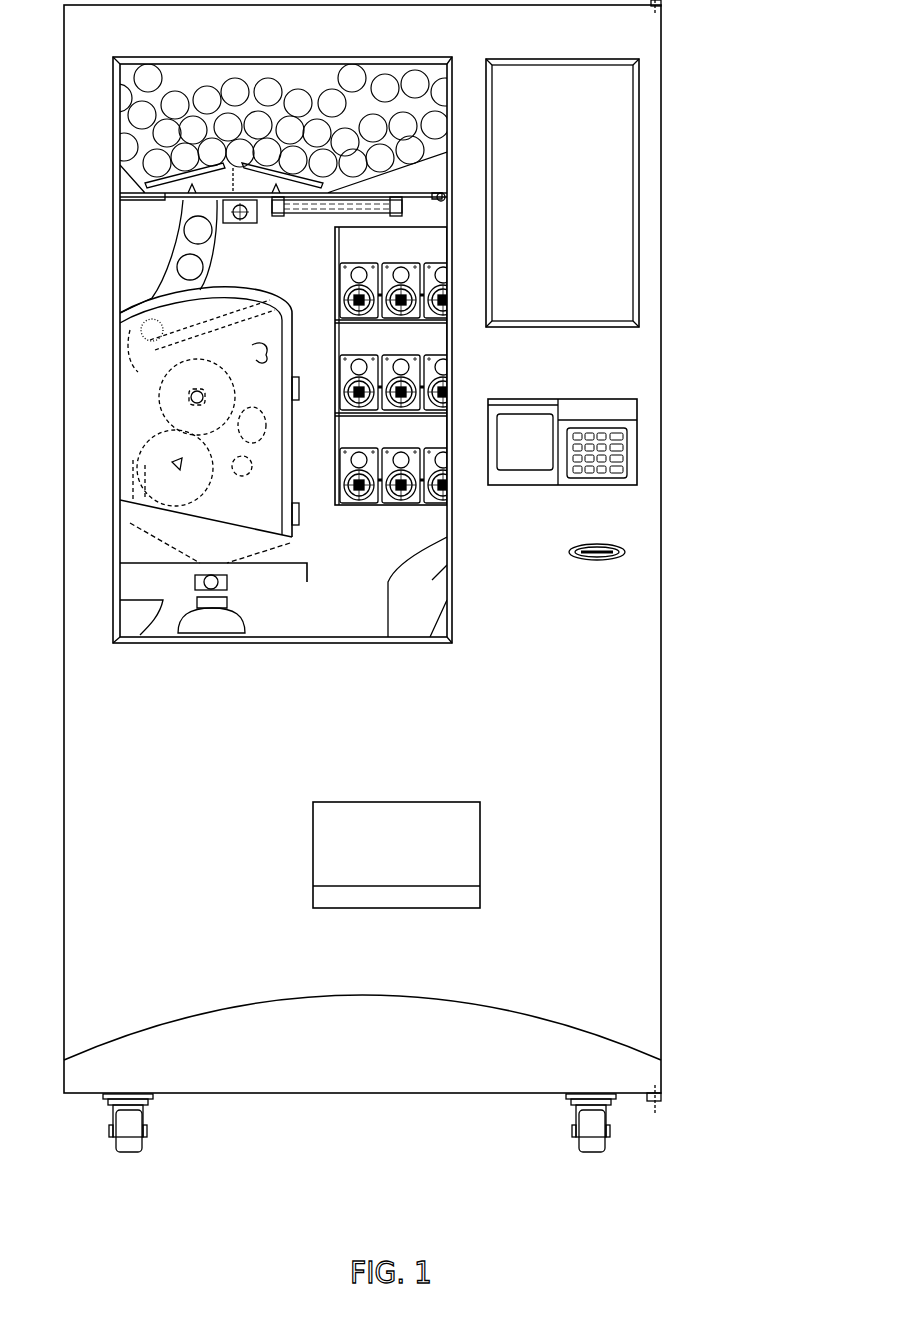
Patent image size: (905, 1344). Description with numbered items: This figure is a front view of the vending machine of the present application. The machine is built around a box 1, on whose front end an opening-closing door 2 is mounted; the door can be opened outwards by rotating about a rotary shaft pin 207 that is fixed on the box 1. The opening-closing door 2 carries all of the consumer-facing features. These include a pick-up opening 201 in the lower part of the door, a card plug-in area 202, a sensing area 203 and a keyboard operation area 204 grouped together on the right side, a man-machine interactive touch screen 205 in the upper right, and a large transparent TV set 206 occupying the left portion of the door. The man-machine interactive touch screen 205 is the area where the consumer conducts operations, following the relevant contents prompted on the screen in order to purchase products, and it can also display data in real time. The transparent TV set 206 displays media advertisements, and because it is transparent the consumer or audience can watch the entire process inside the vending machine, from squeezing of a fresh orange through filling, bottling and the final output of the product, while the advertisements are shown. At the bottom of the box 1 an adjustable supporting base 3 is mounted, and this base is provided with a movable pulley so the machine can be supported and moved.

The box 1 is at (676, 427).
The opening-closing door 2 is at (598, 858).
The adjustable supporting base 3 is at (133, 1132).
The pick-up opening 201 is at (382, 858).
The card plug-in area 202 is at (610, 556).
The sensing area 203 is at (521, 455).
The keyboard operation area 204 is at (598, 458).
The man-machine interactive touch screen 205 is at (605, 162).
The transparent TV set 206 is at (355, 588).
The rotary shaft pin 207 is at (661, 3).